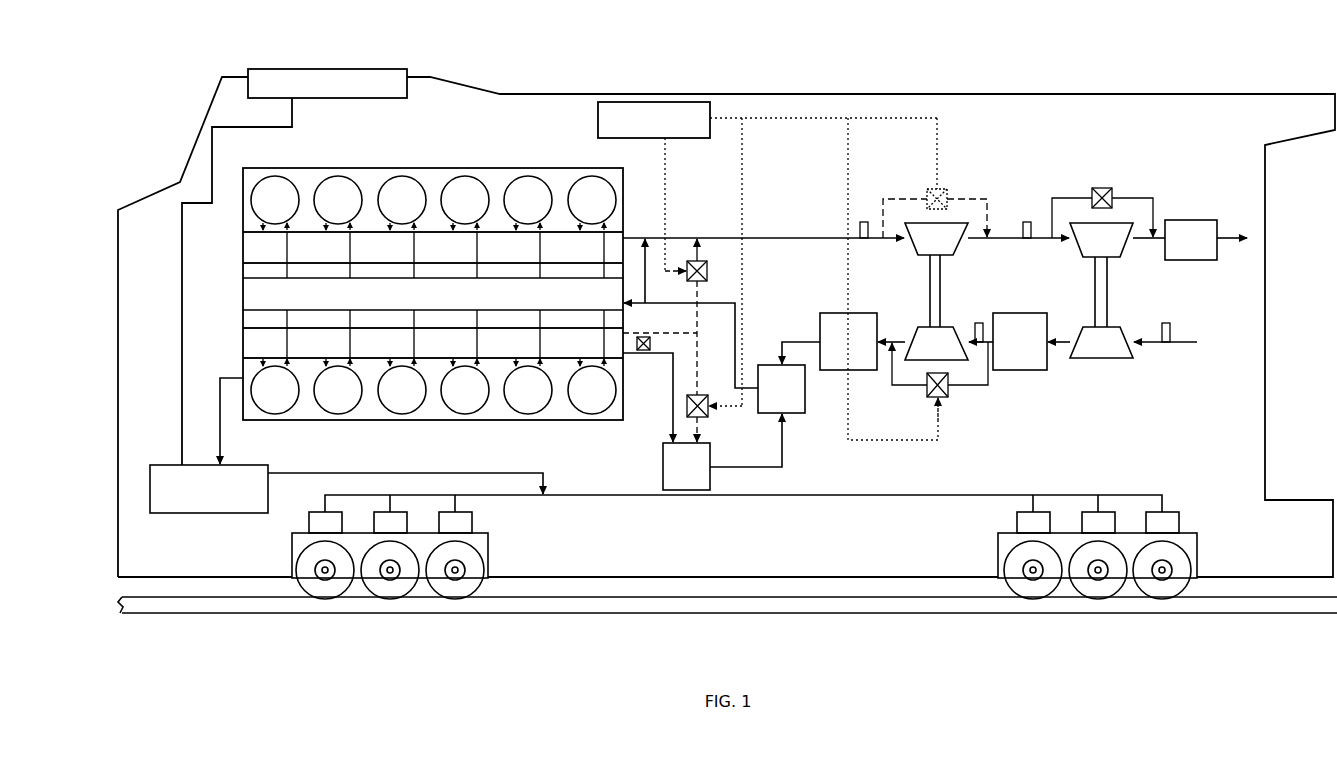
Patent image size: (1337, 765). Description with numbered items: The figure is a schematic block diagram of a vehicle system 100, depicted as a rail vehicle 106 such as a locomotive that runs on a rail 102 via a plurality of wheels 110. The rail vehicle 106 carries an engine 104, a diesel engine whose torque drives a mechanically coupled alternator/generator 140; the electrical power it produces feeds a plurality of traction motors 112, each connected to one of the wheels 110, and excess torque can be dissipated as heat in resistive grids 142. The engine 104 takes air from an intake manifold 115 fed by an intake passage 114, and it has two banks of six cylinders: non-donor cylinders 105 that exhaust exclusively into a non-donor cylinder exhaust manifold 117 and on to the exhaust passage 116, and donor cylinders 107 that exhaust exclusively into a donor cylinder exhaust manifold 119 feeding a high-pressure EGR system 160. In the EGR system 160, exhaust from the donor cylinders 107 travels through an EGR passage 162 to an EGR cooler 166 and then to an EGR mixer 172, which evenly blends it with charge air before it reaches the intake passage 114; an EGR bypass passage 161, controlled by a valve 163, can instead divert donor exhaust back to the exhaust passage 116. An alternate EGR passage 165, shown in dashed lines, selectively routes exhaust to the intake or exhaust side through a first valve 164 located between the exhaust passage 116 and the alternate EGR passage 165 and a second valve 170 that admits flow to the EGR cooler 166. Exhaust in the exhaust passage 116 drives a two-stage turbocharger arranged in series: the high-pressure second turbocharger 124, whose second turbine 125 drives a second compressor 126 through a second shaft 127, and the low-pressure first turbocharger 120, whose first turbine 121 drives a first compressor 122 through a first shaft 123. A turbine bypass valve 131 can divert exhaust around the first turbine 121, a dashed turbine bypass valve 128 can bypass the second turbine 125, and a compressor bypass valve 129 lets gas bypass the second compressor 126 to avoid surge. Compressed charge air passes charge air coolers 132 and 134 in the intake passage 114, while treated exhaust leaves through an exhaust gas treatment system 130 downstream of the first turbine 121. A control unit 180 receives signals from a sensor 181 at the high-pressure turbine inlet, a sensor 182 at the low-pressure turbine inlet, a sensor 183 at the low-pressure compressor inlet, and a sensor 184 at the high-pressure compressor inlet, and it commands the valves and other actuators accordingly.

The vehicle system 100 is at (1173, 70).
The rail 102 is at (1260, 613).
The engine 104 is at (410, 291).
The non-donor cylinders 105 is at (402, 177).
The rail vehicle 106 is at (1030, 93).
The donor cylinders 107 is at (402, 421).
The wheels 110 is at (474, 558).
The traction motors 112 is at (474, 518).
The intake passage 114 is at (1150, 345).
The intake manifold 115 is at (410, 297).
The exhaust passage 116 is at (780, 238).
The non-donor cylinder exhaust manifold 117 is at (243, 248).
The donor cylinder exhaust manifold 119 is at (243, 345).
The first turbocharger 120 is at (1147, 290).
The first turbine 121 is at (1101, 240).
The first compressor 122 is at (1090, 342).
The first shaft 123 is at (1107, 305).
The second turbocharger 124 is at (944, 297).
The second turbine 125 is at (936, 239).
The second compressor 126 is at (936, 343).
The second shaft 127 is at (941, 301).
The turbine bypass valve 128 is at (948, 195).
The compressor bypass valve 129 is at (926, 388).
The exhaust gas treatment system 130 is at (1190, 240).
The turbine bypass valve 131 is at (1112, 195).
The charge air cooler 132 is at (1008, 341).
The charge air cooler 134 is at (862, 341).
The alternator/generator 140 is at (346, 445).
The resistive grids 142 is at (398, 68).
The EGR system 160 is at (801, 455).
The EGR bypass passage 161 is at (646, 270).
The EGR passage 162 is at (672, 386).
The valve 163 is at (647, 337).
The first valve 164 is at (702, 268).
The alternate EGR passage 165 is at (699, 340).
The EGR cooler 166 is at (722, 452).
The second valve 170 is at (705, 418).
The EGR mixer 172 is at (714, 358).
The control unit 180 is at (769, 271).
The sensor 181 is at (864, 222).
The sensor 182 is at (1027, 222).
The sensor 183 is at (1166, 323).
The sensor 184 is at (979, 323).